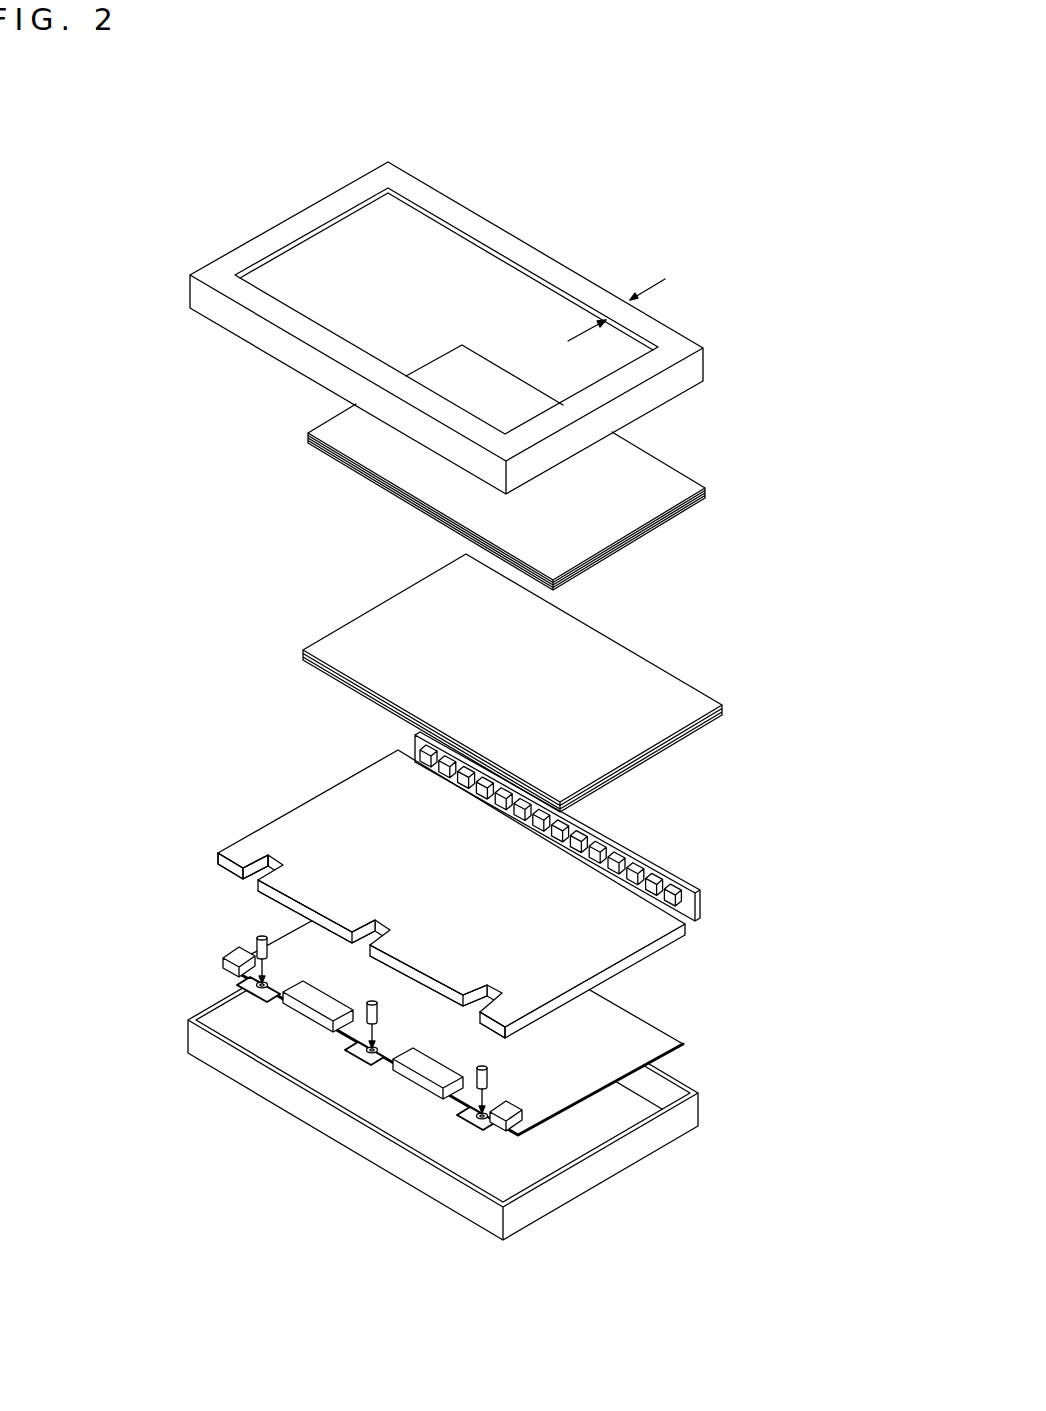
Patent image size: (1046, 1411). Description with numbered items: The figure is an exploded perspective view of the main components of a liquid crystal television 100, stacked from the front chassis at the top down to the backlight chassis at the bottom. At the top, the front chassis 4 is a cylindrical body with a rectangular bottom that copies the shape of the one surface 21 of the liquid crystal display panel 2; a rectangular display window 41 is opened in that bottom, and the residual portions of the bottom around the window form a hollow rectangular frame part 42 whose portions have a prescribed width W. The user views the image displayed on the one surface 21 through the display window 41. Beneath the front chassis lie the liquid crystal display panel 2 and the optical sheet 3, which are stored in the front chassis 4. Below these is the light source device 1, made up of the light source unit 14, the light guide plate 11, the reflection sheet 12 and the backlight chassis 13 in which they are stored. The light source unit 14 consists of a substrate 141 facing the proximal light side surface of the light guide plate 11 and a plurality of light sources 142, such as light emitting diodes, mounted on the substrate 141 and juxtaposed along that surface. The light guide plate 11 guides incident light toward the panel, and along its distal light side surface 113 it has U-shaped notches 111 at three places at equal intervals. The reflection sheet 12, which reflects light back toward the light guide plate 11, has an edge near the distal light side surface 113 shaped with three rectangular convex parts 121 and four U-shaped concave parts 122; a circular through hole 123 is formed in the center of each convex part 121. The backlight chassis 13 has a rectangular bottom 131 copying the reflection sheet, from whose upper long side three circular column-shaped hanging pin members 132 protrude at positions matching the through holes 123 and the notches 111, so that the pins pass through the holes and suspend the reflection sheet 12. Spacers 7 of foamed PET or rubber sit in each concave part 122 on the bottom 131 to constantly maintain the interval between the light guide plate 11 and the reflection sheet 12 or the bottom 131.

The liquid crystal television 100 is at (748, 197).
The light source device 1 is at (472, 1020).
The light guide plate 11 is at (426, 894).
The notches 111 is at (477, 988).
The distal light side surface 113 is at (214, 853).
The reflection sheet 12 is at (421, 1092).
The convex parts 121 is at (373, 1063).
The concave parts 122 is at (250, 978).
The through holes 123 is at (250, 988).
The backlight chassis 13 is at (486, 1073).
The bottom 131 is at (618, 1118).
The hanging pin members 132 is at (258, 939).
The light source unit 14 is at (603, 826).
The substrate 141 is at (686, 879).
The light sources 142 is at (653, 884).
The liquid crystal display panel 2 is at (482, 480).
The one surface 21 is at (660, 467).
The optical sheet 3 is at (325, 612).
The front chassis 4 is at (414, 311).
The display window 41 is at (504, 248).
The frame part 42 is at (446, 200).
The spacers 7 is at (226, 958).